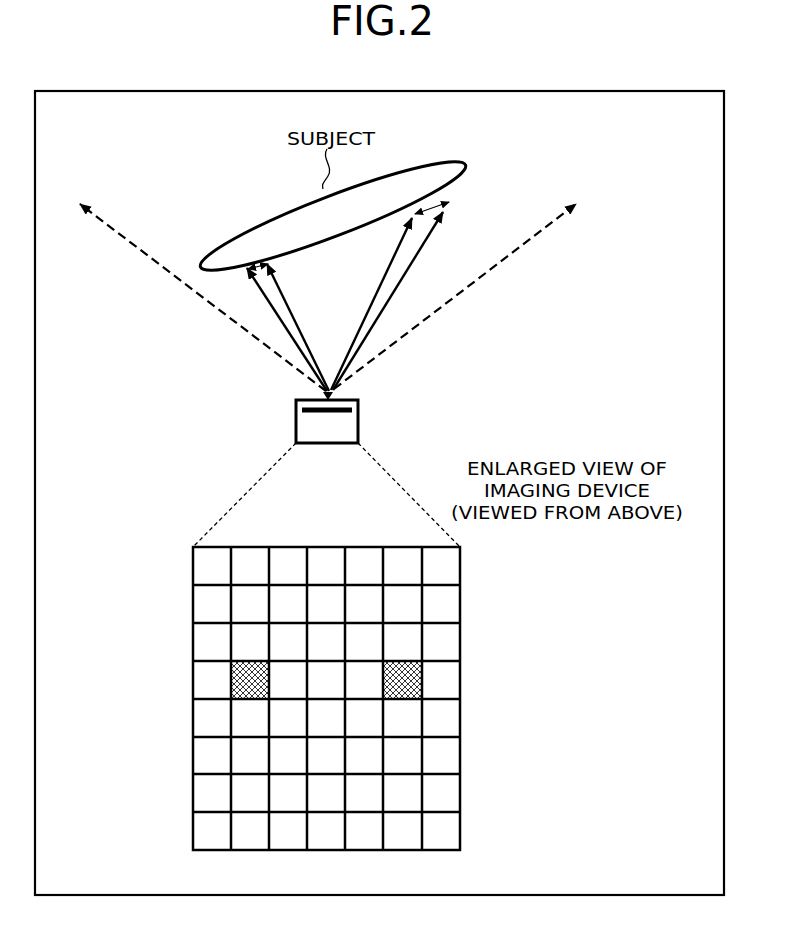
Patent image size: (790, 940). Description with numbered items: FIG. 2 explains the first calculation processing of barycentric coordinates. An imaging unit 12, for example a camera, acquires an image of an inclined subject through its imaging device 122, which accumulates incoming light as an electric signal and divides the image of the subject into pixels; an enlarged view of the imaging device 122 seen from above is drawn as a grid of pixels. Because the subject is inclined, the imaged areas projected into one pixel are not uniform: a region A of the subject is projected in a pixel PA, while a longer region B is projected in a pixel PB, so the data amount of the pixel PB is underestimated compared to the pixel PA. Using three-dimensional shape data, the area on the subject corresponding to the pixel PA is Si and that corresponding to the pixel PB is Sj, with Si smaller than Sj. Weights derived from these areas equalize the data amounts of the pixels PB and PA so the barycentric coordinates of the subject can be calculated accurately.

The imaging unit 12 is at (360, 406).
The imaging device 122 is at (296, 409).
The region A is at (250, 247).
The region B is at (437, 193).
The area Si is at (274, 280).
The area Sj is at (447, 214).
The pixel PA is at (250, 680).
The pixel PB is at (402, 680).